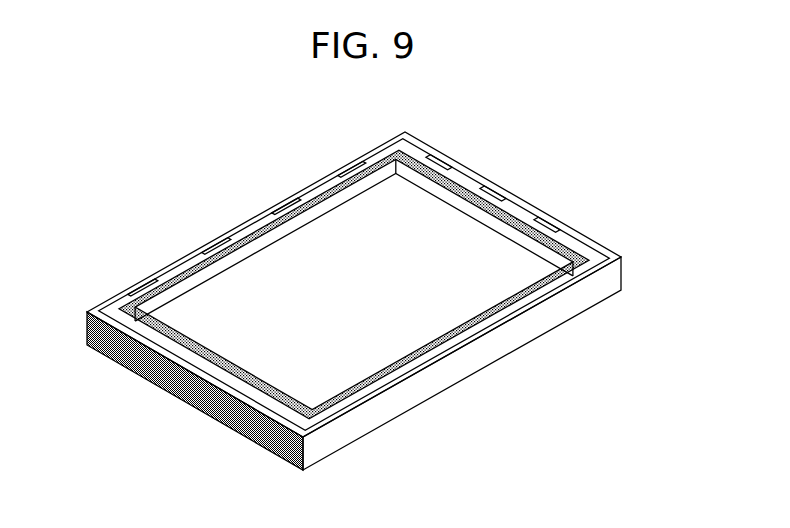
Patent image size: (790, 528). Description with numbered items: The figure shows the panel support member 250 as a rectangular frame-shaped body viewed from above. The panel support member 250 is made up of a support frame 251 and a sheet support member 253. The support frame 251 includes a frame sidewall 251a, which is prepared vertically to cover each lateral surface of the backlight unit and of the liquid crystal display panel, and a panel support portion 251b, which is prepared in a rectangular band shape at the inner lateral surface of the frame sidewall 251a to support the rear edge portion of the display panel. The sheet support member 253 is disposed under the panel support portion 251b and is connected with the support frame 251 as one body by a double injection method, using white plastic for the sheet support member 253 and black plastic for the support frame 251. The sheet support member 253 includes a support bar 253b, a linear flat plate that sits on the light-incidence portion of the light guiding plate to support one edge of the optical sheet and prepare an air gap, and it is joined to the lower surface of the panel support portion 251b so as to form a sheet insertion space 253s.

The panel support member 250 is at (161, 161).
The support frame 251 is at (645, 160).
The frame sidewall 251a is at (538, 230).
The panel support portion 251b is at (513, 197).
The sheet support member 253 is at (598, 401).
The sheet insertion space 253s is at (533, 247).
The support bar 253b is at (548, 258).